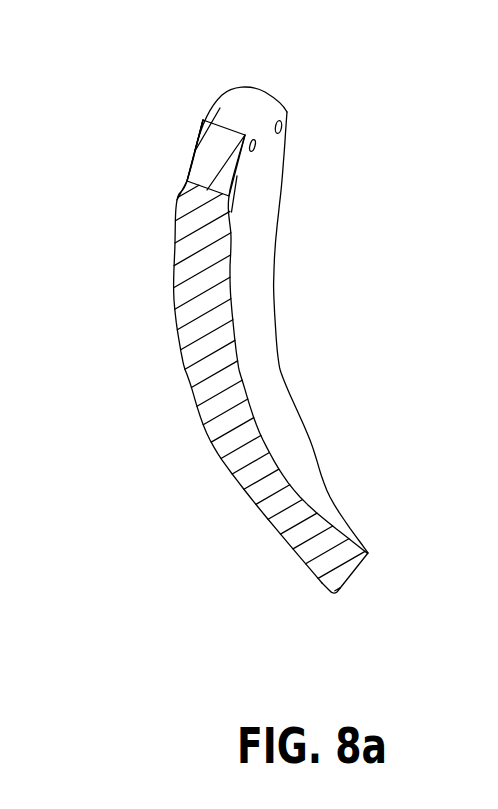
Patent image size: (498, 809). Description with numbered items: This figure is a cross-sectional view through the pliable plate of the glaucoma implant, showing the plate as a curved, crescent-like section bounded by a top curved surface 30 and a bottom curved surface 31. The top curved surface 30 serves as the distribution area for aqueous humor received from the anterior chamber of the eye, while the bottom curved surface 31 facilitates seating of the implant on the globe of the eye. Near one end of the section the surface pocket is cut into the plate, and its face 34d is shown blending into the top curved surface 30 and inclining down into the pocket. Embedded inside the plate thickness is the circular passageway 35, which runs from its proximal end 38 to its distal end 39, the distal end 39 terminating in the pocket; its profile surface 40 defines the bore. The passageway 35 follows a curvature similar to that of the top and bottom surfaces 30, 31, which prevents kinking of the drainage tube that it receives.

The top curved surface 30 is at (186, 363).
The bottom curved surface 31 is at (260, 338).
The face 34d is at (200, 207).
The circular passageway 35 is at (215, 158).
The proximal end 38 is at (238, 128).
The distal end 39 is at (185, 198).
The profile surface 40 is at (200, 154).